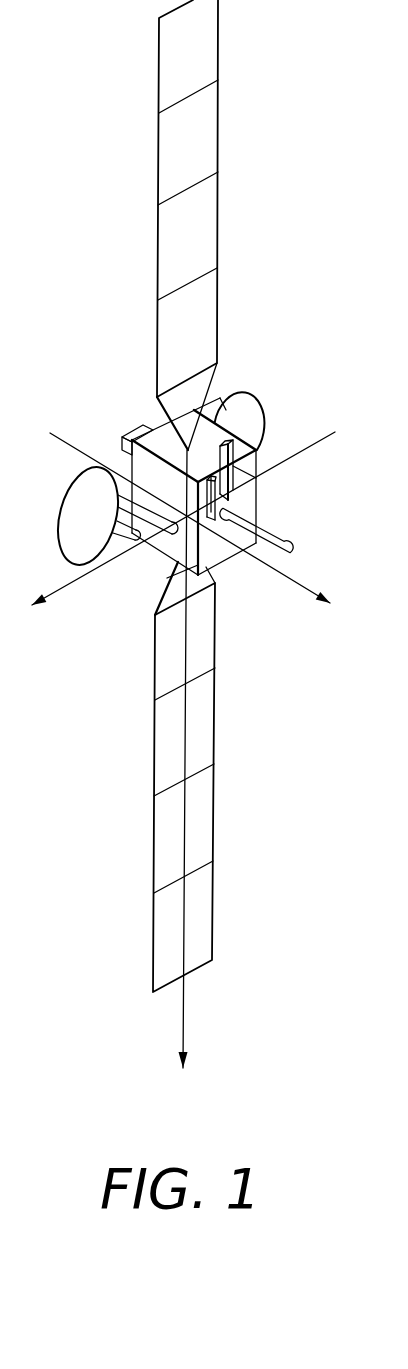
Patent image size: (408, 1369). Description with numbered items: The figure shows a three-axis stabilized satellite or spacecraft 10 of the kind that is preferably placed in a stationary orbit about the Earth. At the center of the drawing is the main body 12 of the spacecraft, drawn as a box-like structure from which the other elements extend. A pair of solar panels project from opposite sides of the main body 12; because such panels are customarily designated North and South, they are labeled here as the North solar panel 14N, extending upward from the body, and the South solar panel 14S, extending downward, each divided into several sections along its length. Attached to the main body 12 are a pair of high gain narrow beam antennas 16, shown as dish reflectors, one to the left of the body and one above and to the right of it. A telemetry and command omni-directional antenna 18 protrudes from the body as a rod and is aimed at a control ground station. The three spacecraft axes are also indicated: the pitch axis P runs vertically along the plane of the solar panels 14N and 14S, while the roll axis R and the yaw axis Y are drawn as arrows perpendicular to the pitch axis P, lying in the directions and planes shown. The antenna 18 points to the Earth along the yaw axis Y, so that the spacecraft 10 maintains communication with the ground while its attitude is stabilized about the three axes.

The satellite 10 is at (287, 177).
The main body 12 is at (245, 497).
The North solar panel 14N is at (202, 137).
The South solar panel 14S is at (200, 818).
The high gain narrow beam antenna 16 is at (257, 402).
The telemetry and command omni-directional antenna 18 is at (280, 526).
The pitch axis P is at (182, 1012).
The roll axis R is at (63, 585).
The yaw axis Y is at (292, 578).